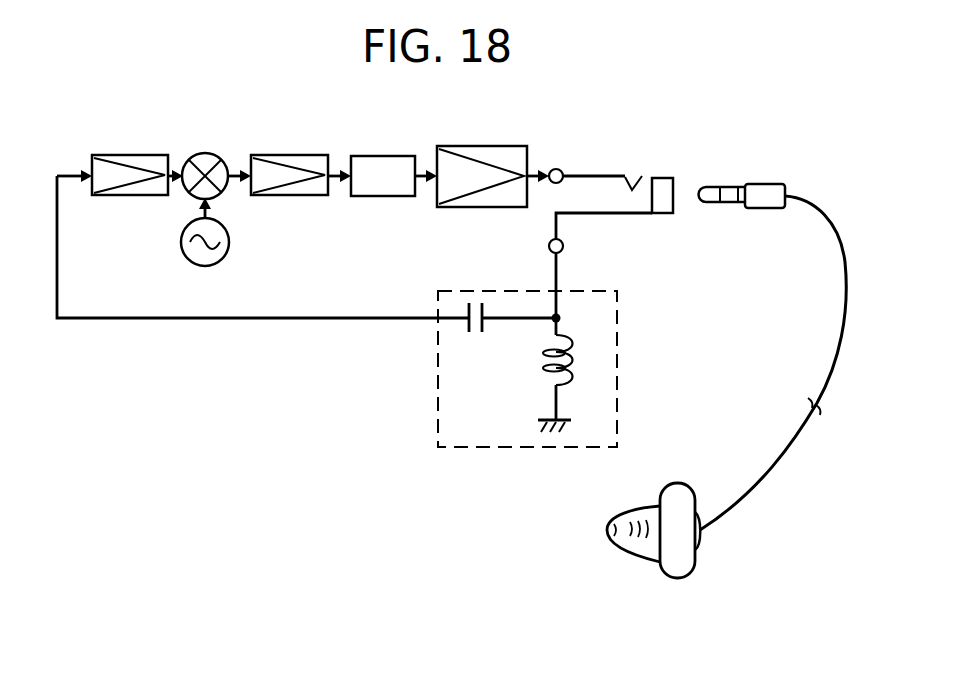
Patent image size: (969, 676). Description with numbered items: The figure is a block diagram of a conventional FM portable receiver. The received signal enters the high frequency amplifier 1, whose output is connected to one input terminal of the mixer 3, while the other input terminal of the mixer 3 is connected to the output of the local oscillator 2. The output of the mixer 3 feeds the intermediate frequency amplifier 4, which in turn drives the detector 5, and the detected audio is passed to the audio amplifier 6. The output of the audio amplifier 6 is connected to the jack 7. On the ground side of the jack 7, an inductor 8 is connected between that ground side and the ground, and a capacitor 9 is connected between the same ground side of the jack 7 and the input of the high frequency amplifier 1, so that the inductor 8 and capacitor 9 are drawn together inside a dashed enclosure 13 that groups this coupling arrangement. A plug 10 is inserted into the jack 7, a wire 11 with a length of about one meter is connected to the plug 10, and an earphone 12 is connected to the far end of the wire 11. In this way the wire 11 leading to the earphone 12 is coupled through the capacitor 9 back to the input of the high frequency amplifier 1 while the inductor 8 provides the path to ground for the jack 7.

The high frequency amplifier 1 is at (130, 153).
The local oscillator 2 is at (193, 263).
The mixer 3 is at (205, 152).
The intermediate frequency amplifier 4 is at (285, 153).
The detector 5 is at (379, 154).
The audio amplifier 6 is at (474, 145).
The jack 7 is at (597, 175).
The inductor 8 is at (572, 362).
The capacitor 9 is at (472, 337).
The plug 10 is at (763, 183).
The wire 11 is at (833, 225).
The earphone 12 is at (675, 560).
The matching circuit 13 is at (620, 315).